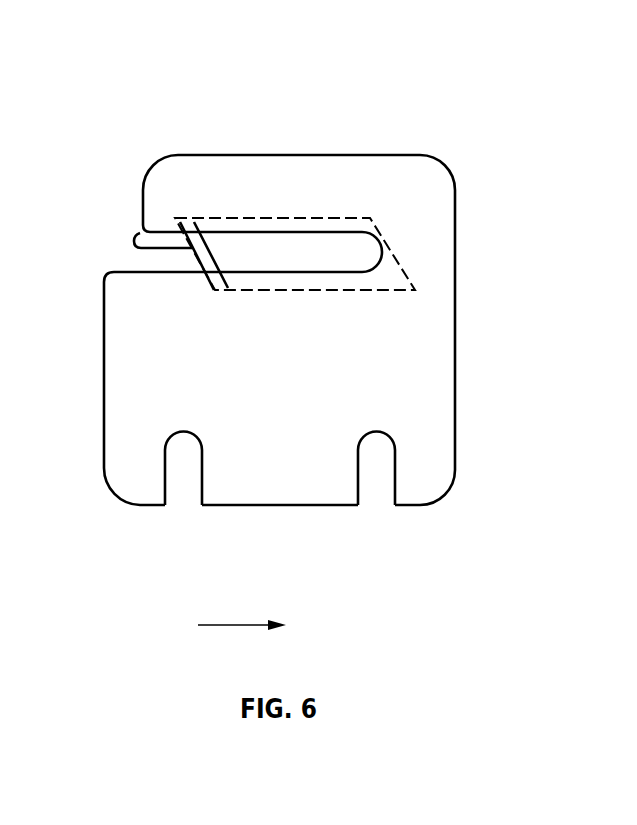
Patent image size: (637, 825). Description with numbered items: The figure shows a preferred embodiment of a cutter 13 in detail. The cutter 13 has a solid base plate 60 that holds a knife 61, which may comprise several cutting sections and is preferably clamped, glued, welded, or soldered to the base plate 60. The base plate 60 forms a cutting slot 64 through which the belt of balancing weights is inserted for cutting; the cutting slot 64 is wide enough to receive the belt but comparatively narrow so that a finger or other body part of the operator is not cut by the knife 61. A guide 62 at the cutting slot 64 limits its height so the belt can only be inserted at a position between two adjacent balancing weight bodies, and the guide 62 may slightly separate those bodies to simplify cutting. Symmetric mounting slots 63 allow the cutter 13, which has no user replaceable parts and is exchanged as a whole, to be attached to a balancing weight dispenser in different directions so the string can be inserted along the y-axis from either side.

The cutter 13 is at (306, 106).
The base plate 60 is at (285, 420).
The knife 61 is at (358, 256).
The guide 62 is at (142, 237).
The mounting slot 63 is at (185, 492).
The cutting slot 64 is at (118, 265).